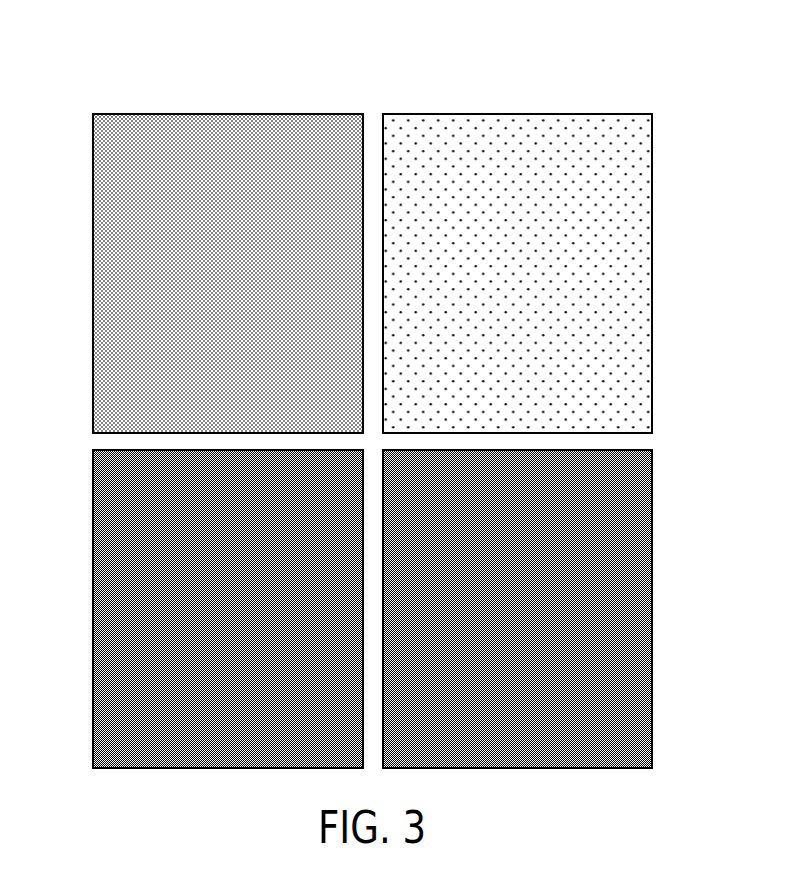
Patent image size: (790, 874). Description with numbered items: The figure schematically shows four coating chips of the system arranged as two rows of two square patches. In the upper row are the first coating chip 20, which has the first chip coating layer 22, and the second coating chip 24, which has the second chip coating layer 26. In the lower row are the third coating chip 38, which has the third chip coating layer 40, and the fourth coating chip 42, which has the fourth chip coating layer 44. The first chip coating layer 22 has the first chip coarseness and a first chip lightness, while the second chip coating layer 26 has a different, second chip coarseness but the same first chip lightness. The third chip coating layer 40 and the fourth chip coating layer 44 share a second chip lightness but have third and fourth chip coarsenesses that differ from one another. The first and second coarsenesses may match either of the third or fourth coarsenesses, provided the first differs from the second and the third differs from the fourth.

The first coating chip 20 is at (175, 113).
The first chip coating layer 22 is at (102, 243).
The second coating chip 24 is at (519, 113).
The second chip coating layer 26 is at (637, 213).
The third coating chip 38 is at (93, 589).
The third chip coating layer 40 is at (102, 690).
The fourth coating chip 42 is at (652, 588).
The fourth chip coating layer 44 is at (637, 513).